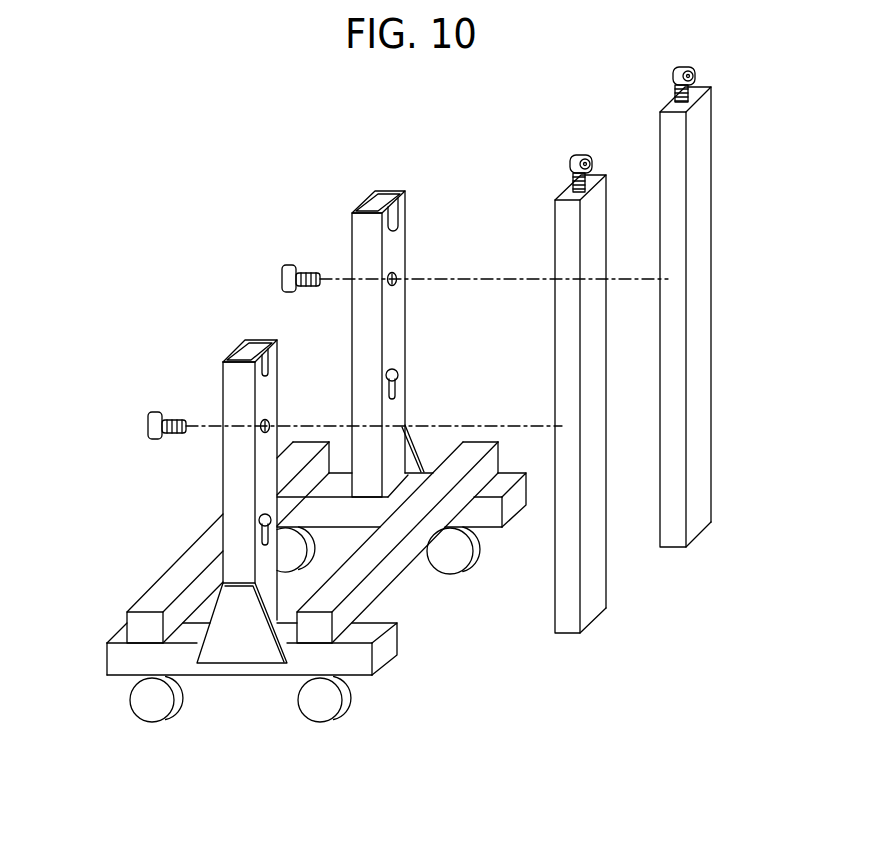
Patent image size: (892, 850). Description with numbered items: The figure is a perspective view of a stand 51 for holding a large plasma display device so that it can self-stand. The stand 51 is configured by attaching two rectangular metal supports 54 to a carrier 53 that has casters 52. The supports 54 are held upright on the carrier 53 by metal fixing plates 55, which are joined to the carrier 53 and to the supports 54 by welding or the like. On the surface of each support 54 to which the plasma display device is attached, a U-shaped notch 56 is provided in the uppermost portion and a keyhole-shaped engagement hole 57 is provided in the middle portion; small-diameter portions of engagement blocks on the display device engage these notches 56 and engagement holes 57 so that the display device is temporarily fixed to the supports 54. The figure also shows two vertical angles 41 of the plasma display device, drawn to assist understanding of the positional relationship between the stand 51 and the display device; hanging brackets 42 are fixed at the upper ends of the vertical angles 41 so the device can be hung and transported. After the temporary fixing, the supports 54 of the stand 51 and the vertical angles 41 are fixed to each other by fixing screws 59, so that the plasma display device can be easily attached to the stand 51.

The vertical angle 41 is at (595, 572).
The hanging bracket 42 is at (578, 153).
The stand 51 is at (180, 543).
The caster 52 is at (305, 650).
The carrier 53 is at (120, 663).
The support 54 is at (393, 332).
The fixing plate 55 is at (410, 463).
The U-shaped notch 56 is at (398, 213).
The keyhole-shaped engagement hole 57 is at (400, 375).
The fixing screw 59 is at (290, 264).